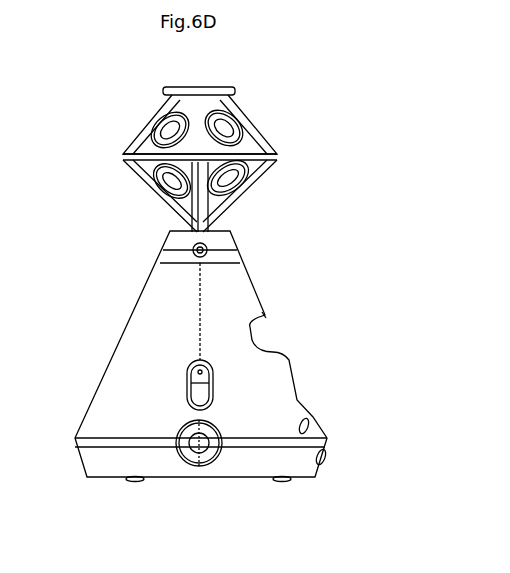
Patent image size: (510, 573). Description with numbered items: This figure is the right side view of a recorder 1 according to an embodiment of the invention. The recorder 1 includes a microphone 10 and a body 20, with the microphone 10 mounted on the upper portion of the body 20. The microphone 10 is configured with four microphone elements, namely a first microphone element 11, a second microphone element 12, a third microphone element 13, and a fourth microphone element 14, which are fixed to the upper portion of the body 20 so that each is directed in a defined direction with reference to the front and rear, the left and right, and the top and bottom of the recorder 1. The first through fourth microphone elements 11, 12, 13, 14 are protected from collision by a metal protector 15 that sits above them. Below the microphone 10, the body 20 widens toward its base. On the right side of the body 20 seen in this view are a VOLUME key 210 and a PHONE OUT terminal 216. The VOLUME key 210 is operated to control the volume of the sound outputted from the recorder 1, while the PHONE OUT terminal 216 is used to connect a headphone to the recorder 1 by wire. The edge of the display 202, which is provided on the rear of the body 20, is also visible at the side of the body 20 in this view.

The recorder 1 is at (204, 57).
The microphone 10 is at (257, 108).
The first microphone element 11 is at (158, 122).
The second microphone element 12 is at (160, 188).
The third microphone element 13 is at (248, 187).
The fourth microphone element 14 is at (247, 125).
The metal protector 15 is at (170, 88).
The body 20 is at (258, 278).
The display 202 is at (275, 354).
The VOLUME key 210 is at (190, 383).
The PHONE OUT terminal 216 is at (200, 445).